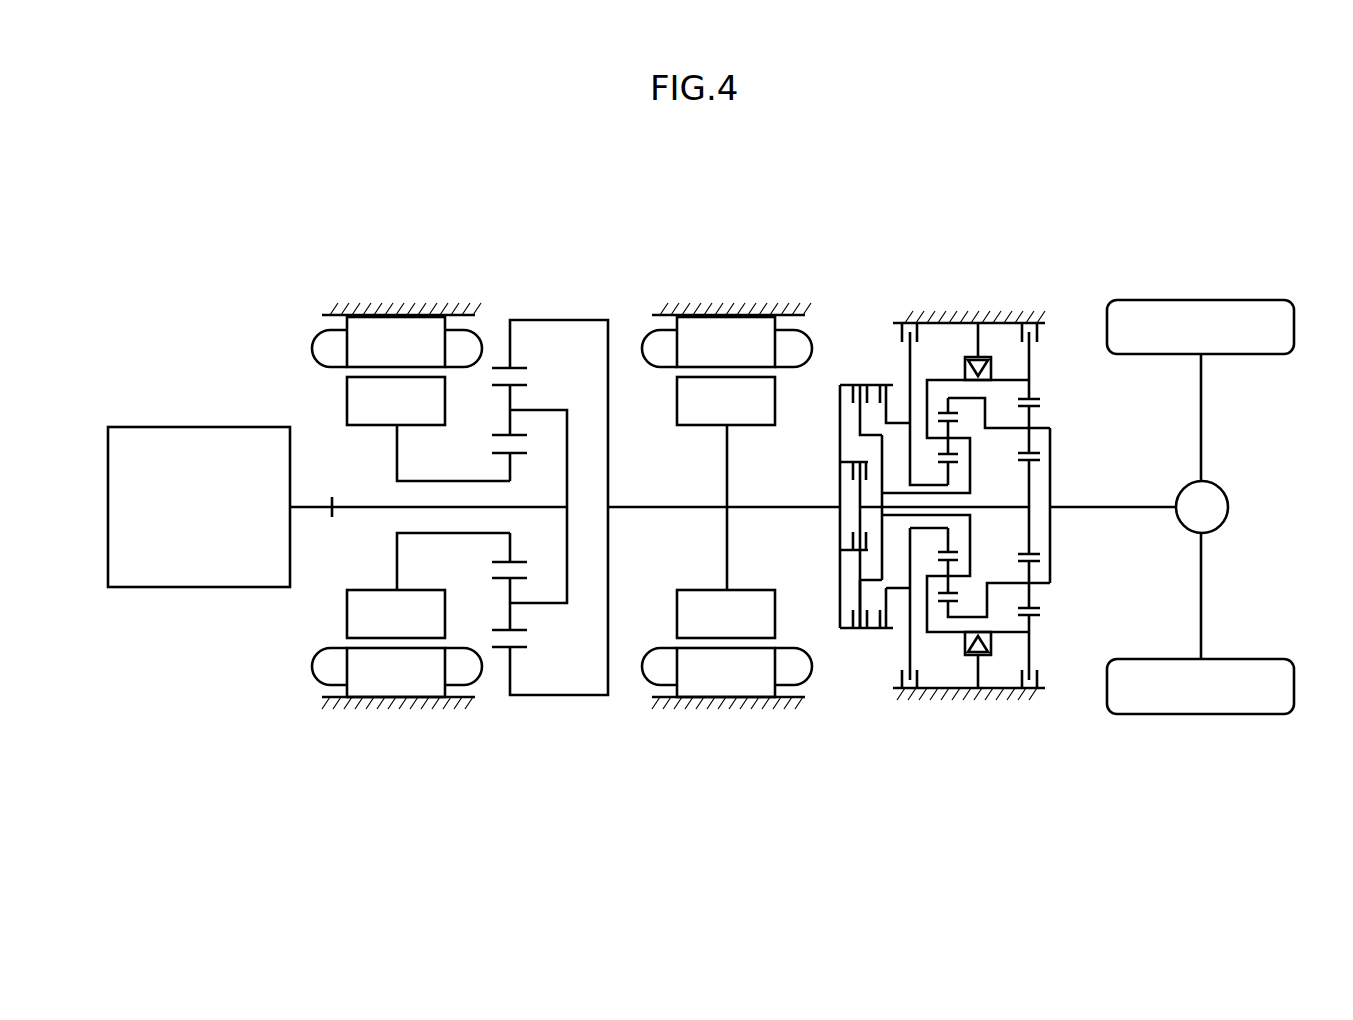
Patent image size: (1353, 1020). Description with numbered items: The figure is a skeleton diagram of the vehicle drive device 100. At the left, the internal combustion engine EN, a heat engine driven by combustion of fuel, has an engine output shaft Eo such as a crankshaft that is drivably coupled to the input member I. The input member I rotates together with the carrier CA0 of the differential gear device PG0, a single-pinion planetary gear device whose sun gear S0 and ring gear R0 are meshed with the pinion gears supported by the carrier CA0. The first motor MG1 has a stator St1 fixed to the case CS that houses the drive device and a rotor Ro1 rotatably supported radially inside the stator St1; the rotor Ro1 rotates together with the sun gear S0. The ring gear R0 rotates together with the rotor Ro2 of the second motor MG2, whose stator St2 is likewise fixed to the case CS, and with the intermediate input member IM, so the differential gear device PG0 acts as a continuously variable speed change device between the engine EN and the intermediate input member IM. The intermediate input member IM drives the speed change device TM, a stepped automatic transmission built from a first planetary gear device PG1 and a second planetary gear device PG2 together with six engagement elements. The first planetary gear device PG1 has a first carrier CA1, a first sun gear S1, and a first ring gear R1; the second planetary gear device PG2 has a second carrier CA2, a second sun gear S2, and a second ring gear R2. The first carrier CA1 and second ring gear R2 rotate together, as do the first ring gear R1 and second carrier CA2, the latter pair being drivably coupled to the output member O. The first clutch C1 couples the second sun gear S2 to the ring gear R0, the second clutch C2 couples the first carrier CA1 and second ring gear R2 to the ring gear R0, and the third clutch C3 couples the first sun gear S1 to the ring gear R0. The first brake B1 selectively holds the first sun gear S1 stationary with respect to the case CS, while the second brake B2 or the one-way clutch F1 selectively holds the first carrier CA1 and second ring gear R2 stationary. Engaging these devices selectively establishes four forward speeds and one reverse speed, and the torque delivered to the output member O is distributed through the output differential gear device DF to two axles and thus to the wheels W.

The vehicle drive device 100 is at (262, 258).
The internal combustion engine EN is at (180, 427).
The engine output shaft Eo is at (312, 513).
The input member I is at (363, 513).
The first motor MG1 is at (390, 291).
The stator of the first motor St1 is at (397, 507).
The rotor of the first motor Ro1 is at (428, 507).
The differential gear device PG0 is at (538, 301).
The carrier CA0 is at (548, 408).
The sun gear S0 is at (519, 558).
The ring gear R0 is at (519, 643).
The case CS is at (402, 710).
The second motor MG2 is at (720, 286).
The stator of the second motor St2 is at (727, 507).
The rotor of the second motor Ro2 is at (726, 507).
The intermediate input member IM is at (755, 505).
The speed change device TM is at (970, 289).
The first brake B1 is at (900, 326).
The second brake B2 is at (1040, 681).
The first planetary gear device PG1 is at (943, 373).
The second planetary gear device PG2 is at (1049, 387).
The first clutch C1 is at (856, 552).
The second clutch C2 is at (848, 386).
The third clutch C3 is at (887, 630).
The first sun gear S1 is at (953, 464).
The first carrier CA1 is at (972, 560).
The first ring gear R1 is at (952, 591).
The second sun gear S2 is at (1036, 462).
The second carrier CA2 is at (1051, 548).
The second ring gear R2 is at (1035, 615).
The one-way clutch F1 is at (975, 653).
The output member O is at (1112, 505).
The output differential gear device DF is at (1223, 492).
The wheels W is at (1200, 300).